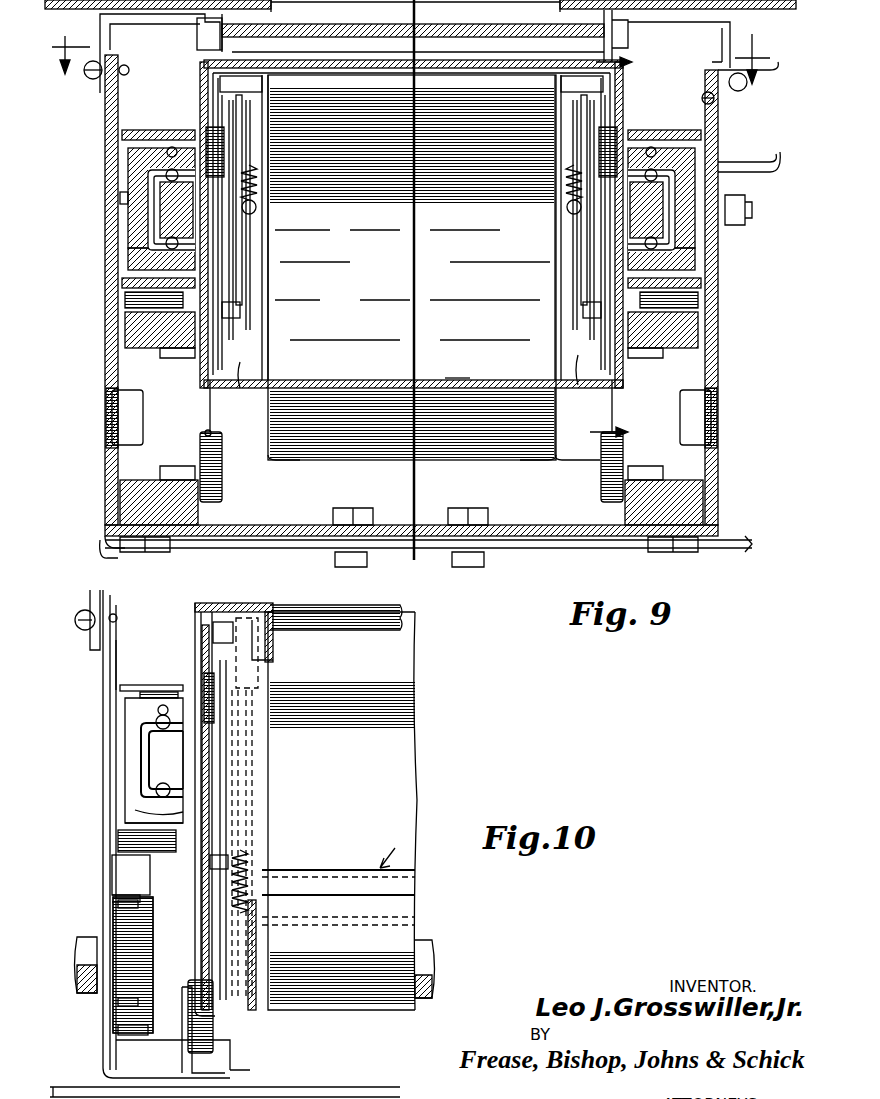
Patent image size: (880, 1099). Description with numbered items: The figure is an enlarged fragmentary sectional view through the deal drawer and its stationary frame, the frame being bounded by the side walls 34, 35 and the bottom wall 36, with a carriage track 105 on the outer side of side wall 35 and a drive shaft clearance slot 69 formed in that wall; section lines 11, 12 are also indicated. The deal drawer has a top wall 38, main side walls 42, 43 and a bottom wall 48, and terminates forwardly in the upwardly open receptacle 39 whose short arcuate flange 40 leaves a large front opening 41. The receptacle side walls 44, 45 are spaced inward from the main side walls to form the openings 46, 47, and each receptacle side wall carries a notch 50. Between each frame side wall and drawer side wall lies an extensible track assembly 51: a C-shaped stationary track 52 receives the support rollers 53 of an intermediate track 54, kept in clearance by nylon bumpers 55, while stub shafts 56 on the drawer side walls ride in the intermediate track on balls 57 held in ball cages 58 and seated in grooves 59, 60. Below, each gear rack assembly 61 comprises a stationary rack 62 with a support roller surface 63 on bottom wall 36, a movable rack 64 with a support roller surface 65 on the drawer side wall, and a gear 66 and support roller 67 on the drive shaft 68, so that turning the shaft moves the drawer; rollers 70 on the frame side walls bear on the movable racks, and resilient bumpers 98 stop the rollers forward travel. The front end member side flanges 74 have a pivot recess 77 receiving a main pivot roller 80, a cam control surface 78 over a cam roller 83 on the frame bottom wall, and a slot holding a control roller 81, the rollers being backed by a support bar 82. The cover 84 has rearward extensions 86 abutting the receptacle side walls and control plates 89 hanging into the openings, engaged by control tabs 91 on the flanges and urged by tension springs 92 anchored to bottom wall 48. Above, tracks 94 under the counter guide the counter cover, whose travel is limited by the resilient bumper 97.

In FIG. 9, the section line 11- 11 is at (621, 247).
In FIG. 9, the section line 12- 12 is at (411, 47).
In FIG. 9, the side wall of stationary frame 34 is at (105, 268).
In FIG. 9, the side wall of stationary frame 35 is at (718, 322).
In FIG. 10, the side wall of stationary frame 35 is at (103, 792).
In FIG. 9, the bottom wall of stationary frame 36 is at (240, 536).
In FIG. 10, the bottom wall of stationary frame 36 is at (365, 1087).
In FIG. 9, the top wall of deal drawer 38 is at (440, 72).
In FIG. 10, the receptacle 39 is at (388, 805).
In FIG. 10, the arcuate upwardly extending flange 40 is at (390, 890).
In FIG. 10, the front opening 41 is at (398, 866).
In FIG. 9, the side wall of deal drawer 42 is at (205, 112).
In FIG. 9, the side wall of deal drawer 43 is at (628, 88).
In FIG. 10, the side wall of deal drawer 43 is at (198, 638).
In FIG. 9, the receptacle side wall 44 is at (270, 244).
In FIG. 9, the receptacle side wall 45 is at (553, 254).
In FIG. 9, the opening 46 is at (240, 388).
In FIG. 9, the opening 47 is at (577, 407).
In FIG. 10, the opening 47 is at (215, 910).
In FIG. 9, the bottom wall of deal drawer 48 is at (443, 375).
In FIG. 10, the bottom wall of deal drawer 48 is at (398, 925).
In FIG. 10, the notch 50 is at (273, 636).
In FIG. 9, the extensible track assembly 51 is at (118, 172).
In FIG. 10, the extensible track assembly 51 is at (122, 685).
In FIG. 9, the stationary track 52 is at (150, 128).
In FIG. 10, the stationary track 52 is at (140, 686).
In FIG. 10, the support roller 53 is at (160, 692).
In FIG. 9, the intermediate track 54 is at (135, 228).
In FIG. 10, the intermediate track 54 is at (130, 720).
In FIG. 9, the nylon bumper 55 is at (128, 198).
In FIG. 9, the stub shaft 56 is at (168, 195).
In FIG. 10, the stub shaft 56 is at (158, 762).
In FIG. 9, the ball 57 is at (140, 152).
In FIG. 10, the ball 57 is at (156, 708).
In FIG. 9, the ball cage 58 is at (135, 213).
In FIG. 10, the ball cage 58 is at (148, 752).
In FIG. 9, the groove of stub shaft 59 is at (412, 209).
In FIG. 10, the groove of stub shaft 59 is at (165, 785).
In FIG. 9, the groove of intermediate track 60 is at (165, 258).
In FIG. 10, the groove of intermediate track 60 is at (165, 807).
In FIG. 10, the gear rack assembly 61 is at (118, 904).
In FIG. 9, the stationary rack 62 is at (130, 505).
In FIG. 10, the stationary rack 62 is at (128, 1058).
In FIG. 9, the support roller surface 63 is at (115, 479).
In FIG. 10, the support roller surface 63 is at (125, 1030).
In FIG. 9, the movable rack 64 is at (138, 322).
In FIG. 10, the movable rack 64 is at (128, 868).
In FIG. 9, the support roller surface 65 is at (137, 348).
In FIG. 10, the support roller surface 65 is at (125, 897).
In FIG. 10, the gear 66 is at (160, 965).
In FIG. 10, the support roller 67 is at (125, 1002).
In FIG. 10, the drive shaft 68 is at (82, 972).
In FIG. 9, the drive shaft clearance slot 69 is at (110, 440).
In FIG. 9, the roller 70 is at (140, 297).
In FIG. 10, the roller 70 is at (128, 842).
In FIG. 9, the side flange 74 is at (214, 268).
In FIG. 10, the side flange 74 is at (212, 800).
In FIG. 9, the pivot recess 77 is at (232, 100).
In FIG. 9, the cam control surface 78 is at (200, 432).
In FIG. 10, the cam control surface 78 is at (203, 985).
In FIG. 9, the main pivot roller 80 is at (224, 140).
In FIG. 10, the main pivot roller 80 is at (206, 676).
In FIG. 9, the control roller 81 is at (218, 320).
In FIG. 10, the control roller 81 is at (210, 866).
In FIG. 9, the support bar 82 is at (236, 230).
In FIG. 10, the support bar 82 is at (228, 750).
In FIG. 9, the cam roller 83 is at (215, 468).
In FIG. 10, the cam roller 83 is at (210, 1040).
In FIG. 10, the cover 84 is at (376, 612).
In FIG. 10, the rearward extension 86 is at (273, 650).
In FIG. 9, the control plate 89 is at (246, 118).
In FIG. 10, the control plate 89 is at (255, 670).
In FIG. 9, the control tab 91 is at (262, 88).
In FIG. 10, the control tab 91 is at (218, 640).
In FIG. 9, the tension spring 92 is at (258, 206).
In FIG. 10, the tension spring 92 is at (250, 908).
In FIG. 9, the track 94 is at (210, 27).
In FIG. 9, the resilient bumper 97 is at (212, 42).
In FIG. 9, the resilient bumper 98 is at (125, 405).
In FIG. 9, the carriage track 105 is at (748, 160).